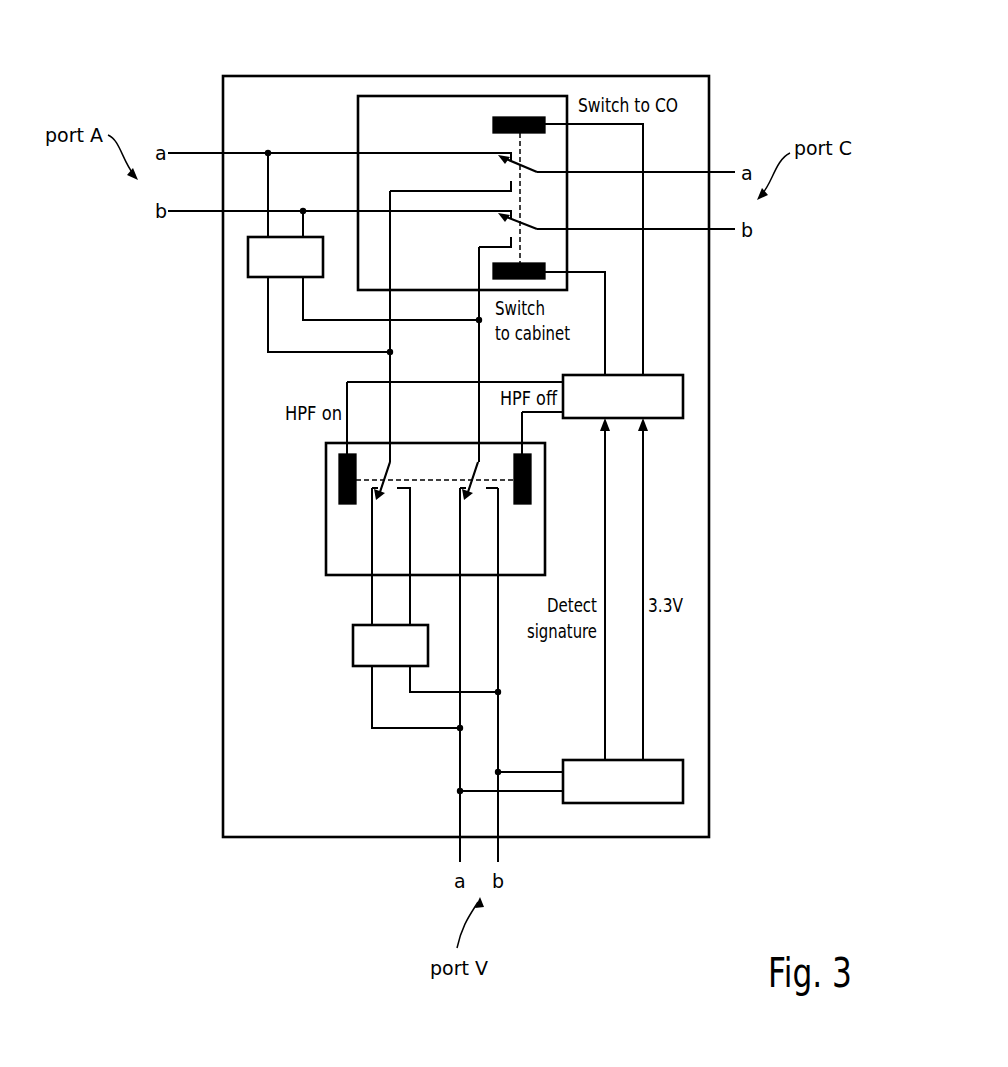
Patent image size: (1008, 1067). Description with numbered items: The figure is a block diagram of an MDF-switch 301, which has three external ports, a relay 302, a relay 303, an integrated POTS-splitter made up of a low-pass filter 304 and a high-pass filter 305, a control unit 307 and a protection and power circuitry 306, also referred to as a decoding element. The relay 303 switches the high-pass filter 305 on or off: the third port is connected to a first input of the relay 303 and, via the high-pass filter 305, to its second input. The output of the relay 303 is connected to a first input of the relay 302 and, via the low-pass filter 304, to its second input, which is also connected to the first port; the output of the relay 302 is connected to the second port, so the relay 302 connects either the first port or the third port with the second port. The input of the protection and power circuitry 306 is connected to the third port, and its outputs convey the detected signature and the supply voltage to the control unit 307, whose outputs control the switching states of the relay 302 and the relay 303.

The MDF-switch 301 is at (337, 76).
The relay 302 is at (433, 96).
The relay 303 is at (326, 537).
The low-pass filter 304 is at (248, 258).
The high-pass filter 305 is at (353, 648).
The protection and power circuitry 306 is at (683, 783).
The control unit 307 is at (683, 400).